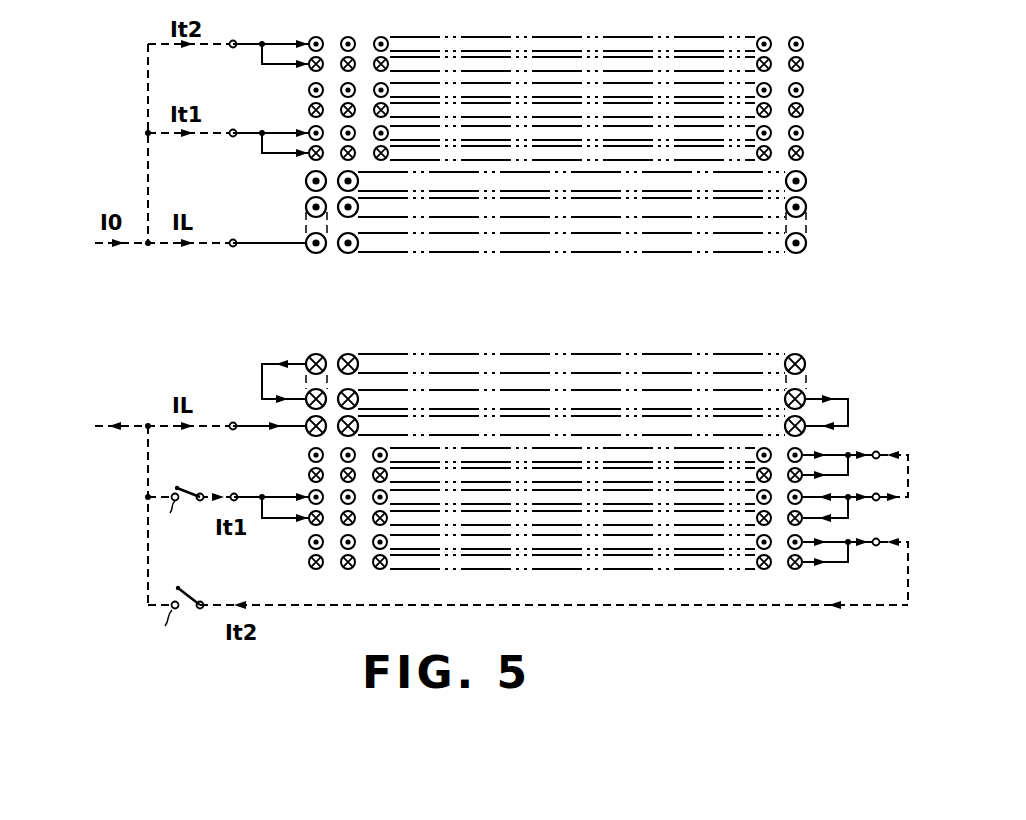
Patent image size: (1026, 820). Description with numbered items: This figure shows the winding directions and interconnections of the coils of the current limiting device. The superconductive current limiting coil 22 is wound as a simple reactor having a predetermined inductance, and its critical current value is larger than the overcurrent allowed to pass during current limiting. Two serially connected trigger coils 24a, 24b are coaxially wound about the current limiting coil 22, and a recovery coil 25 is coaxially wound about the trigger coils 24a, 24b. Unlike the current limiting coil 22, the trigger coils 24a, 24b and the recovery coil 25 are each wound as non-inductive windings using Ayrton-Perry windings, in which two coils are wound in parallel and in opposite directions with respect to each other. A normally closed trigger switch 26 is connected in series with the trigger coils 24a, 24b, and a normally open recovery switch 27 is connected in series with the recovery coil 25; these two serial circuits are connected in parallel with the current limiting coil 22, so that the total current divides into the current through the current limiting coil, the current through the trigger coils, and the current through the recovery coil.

The superconductive current limiting coil 22 is at (808, 224).
The trigger coil 24a is at (803, 135).
The trigger coil 24b is at (803, 92).
The recovery coil 25 is at (803, 46).
The trigger switch 26 is at (190, 486).
The recovery switch 27 is at (193, 592).